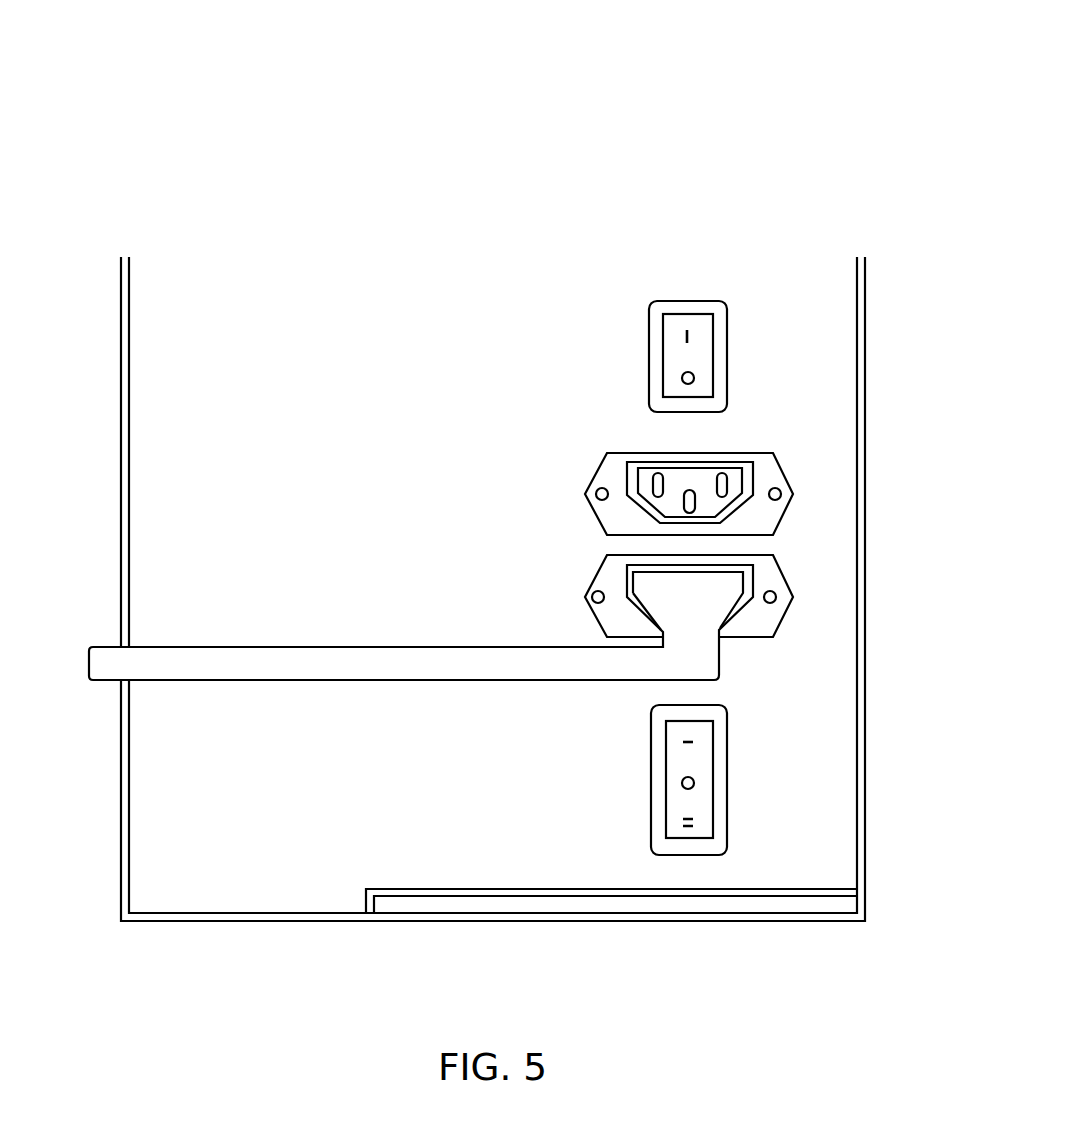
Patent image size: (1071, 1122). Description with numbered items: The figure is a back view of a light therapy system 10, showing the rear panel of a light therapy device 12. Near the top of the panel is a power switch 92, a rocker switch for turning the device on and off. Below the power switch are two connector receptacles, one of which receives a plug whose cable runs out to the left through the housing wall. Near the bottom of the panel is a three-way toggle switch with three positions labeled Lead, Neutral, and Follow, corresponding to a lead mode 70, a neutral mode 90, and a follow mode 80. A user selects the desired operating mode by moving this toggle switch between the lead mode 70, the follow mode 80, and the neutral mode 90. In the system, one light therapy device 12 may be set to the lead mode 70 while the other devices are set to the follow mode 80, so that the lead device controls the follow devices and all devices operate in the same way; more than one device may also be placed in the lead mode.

The light therapy system 10 is at (715, 68).
The light therapy device 12 is at (170, 321).
The power switch 92 is at (693, 300).
The lead mode 70 is at (704, 742).
The neutral mode 90 is at (704, 784).
The follow mode 80 is at (690, 838).